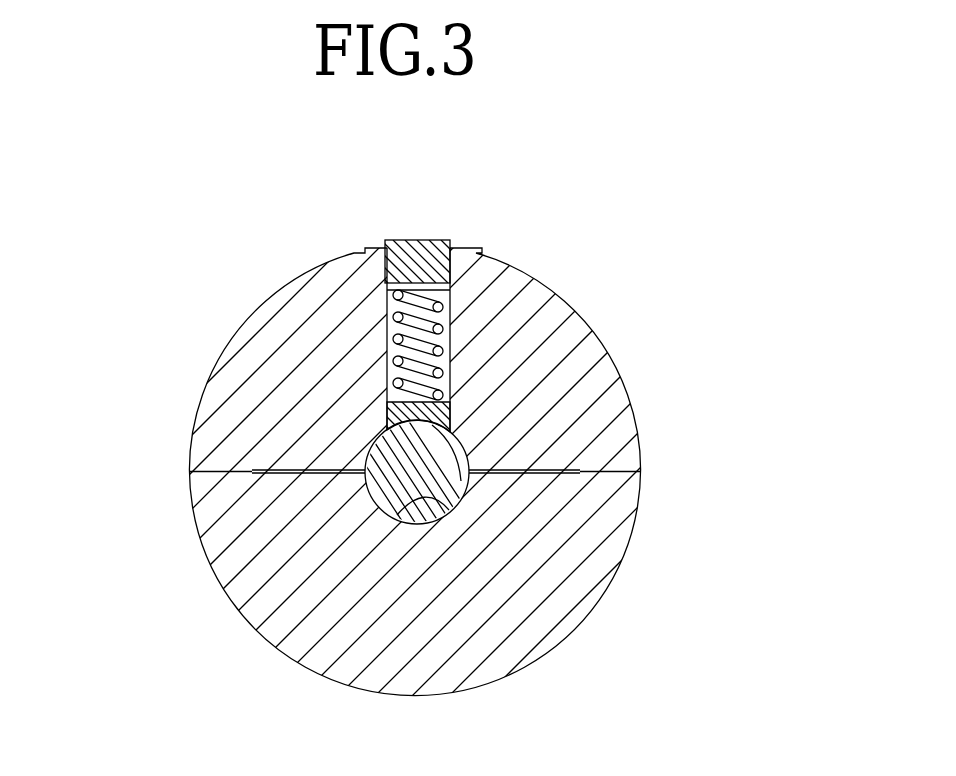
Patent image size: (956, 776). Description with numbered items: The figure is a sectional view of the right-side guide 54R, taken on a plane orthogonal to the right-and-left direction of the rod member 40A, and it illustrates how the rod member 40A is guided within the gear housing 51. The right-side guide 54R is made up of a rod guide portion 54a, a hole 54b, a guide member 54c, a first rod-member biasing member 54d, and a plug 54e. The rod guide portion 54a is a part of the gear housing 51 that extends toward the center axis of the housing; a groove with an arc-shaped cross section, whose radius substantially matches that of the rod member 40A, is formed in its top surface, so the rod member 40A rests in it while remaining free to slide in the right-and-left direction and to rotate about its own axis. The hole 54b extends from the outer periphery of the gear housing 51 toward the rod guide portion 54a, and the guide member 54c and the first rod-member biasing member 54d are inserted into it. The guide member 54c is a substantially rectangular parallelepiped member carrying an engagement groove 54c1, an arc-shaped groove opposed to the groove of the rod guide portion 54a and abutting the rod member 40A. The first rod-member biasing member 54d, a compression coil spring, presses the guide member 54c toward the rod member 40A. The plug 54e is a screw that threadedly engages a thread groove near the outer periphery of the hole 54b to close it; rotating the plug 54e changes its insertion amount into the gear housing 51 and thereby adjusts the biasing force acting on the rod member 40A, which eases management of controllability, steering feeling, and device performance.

The gear housing 51 is at (641, 437).
The rod member 40A is at (238, 613).
The right-side guide 54R is at (375, 447).
The hole 54b is at (452, 346).
The plug 54e is at (396, 240).
The first rod-member biasing member 54d is at (390, 364).
The guide member 54c is at (386, 412).
The engagement groove 54c1 is at (462, 484).
The rod guide portion 54a is at (515, 587).